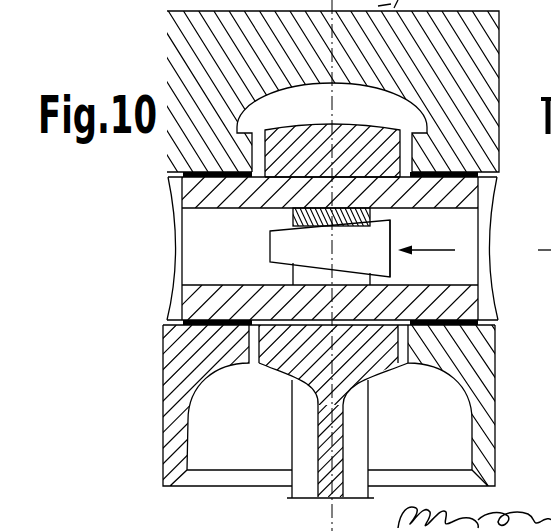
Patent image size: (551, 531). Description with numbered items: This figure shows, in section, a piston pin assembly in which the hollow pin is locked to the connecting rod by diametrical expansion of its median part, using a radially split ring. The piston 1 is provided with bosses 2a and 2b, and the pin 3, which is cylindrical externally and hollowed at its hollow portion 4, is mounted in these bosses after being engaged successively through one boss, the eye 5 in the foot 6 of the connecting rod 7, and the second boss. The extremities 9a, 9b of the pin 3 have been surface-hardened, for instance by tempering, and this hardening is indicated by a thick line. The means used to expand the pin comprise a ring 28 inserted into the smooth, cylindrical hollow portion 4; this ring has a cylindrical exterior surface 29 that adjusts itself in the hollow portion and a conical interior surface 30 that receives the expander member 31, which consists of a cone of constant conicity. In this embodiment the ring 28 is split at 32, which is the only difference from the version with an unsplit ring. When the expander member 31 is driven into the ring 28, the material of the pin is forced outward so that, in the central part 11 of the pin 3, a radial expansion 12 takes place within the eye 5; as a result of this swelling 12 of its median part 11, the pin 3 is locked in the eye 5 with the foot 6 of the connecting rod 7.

The piston 1 is at (481, 36).
The boss 2a is at (188, 343).
The boss 2b is at (472, 362).
The pin 3 is at (197, 192).
The hollow portion 4 is at (205, 228).
The eye 5 is at (270, 171).
The foot 6 is at (292, 364).
The connecting rod 7 is at (333, 494).
The extremity of the pin 9a is at (225, 318).
The extremity of the pin 9b is at (450, 322).
The central part of the pin 11 is at (353, 180).
The radial expansion 12 is at (331, 328).
The ring 28 is at (307, 217).
The cylindrical exterior surface 29 is at (322, 176).
The conical interior surface 30 is at (317, 229).
The expander member 31 is at (373, 259).
The split 32 is at (308, 277).